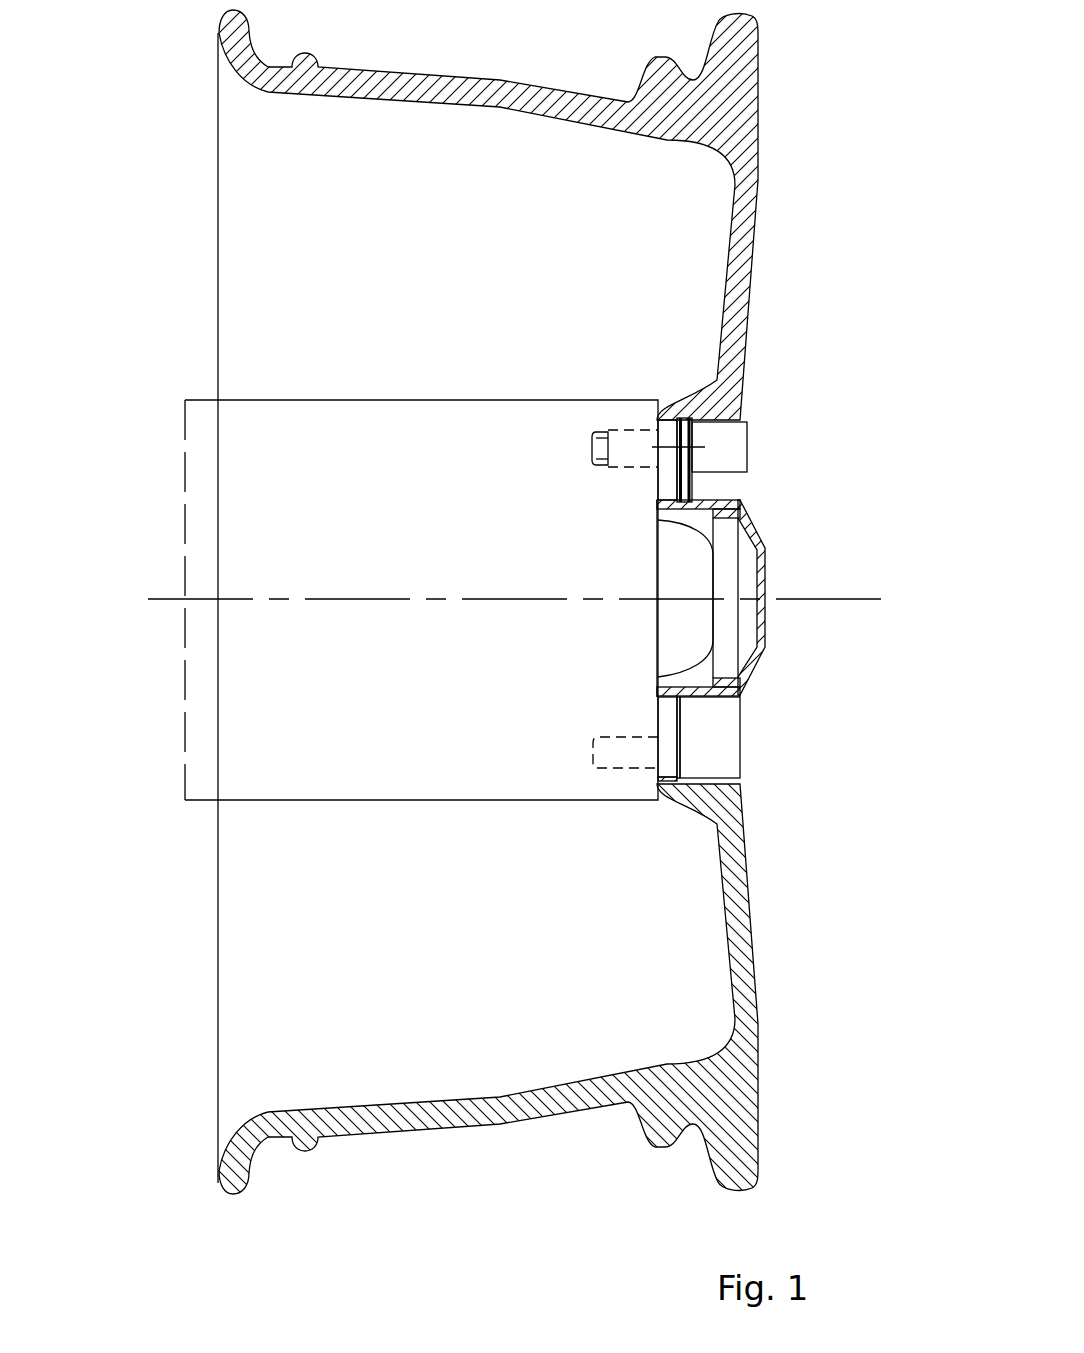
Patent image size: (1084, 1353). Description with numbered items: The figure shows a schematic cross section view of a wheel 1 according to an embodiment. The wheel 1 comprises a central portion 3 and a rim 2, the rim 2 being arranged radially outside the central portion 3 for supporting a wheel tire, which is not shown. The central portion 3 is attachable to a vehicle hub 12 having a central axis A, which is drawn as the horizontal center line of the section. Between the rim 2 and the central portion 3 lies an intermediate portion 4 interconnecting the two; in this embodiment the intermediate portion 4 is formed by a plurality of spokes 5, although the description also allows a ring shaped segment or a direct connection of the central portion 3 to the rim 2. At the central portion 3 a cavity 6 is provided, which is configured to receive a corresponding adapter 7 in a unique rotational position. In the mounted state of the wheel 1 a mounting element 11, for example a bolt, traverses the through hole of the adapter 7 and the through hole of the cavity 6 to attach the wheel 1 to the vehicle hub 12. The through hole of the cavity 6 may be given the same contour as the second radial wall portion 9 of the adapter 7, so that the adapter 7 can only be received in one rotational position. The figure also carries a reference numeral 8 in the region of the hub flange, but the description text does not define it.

The wheel 1 is at (818, 85).
The rim 2 is at (196, 72).
The central portion 3 is at (790, 684).
The intermediate portion 4 is at (788, 267).
The spoke 5 is at (740, 305).
The cavity 6 is at (720, 483).
The adapter 7 is at (692, 490).
The hub flange 8 is at (670, 487).
The second radial wall portion 9 is at (680, 697).
The mounting element 11 is at (720, 447).
The vehicle hub 12 is at (419, 538).
The central axis A is at (875, 599).